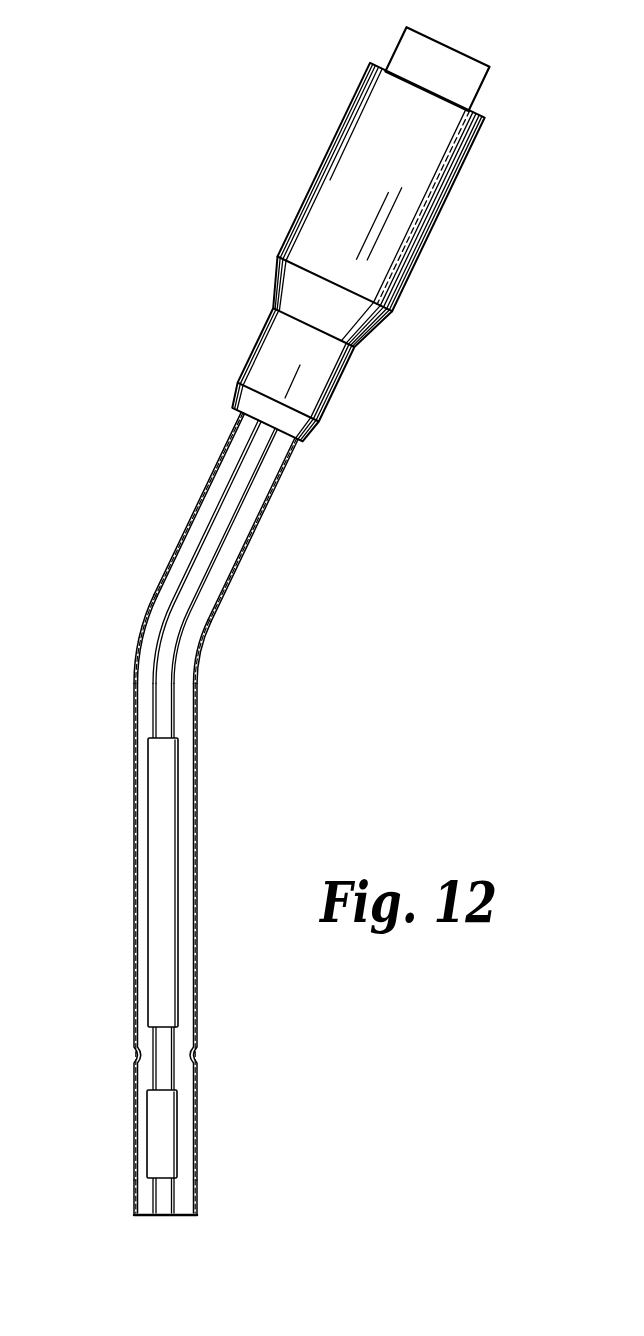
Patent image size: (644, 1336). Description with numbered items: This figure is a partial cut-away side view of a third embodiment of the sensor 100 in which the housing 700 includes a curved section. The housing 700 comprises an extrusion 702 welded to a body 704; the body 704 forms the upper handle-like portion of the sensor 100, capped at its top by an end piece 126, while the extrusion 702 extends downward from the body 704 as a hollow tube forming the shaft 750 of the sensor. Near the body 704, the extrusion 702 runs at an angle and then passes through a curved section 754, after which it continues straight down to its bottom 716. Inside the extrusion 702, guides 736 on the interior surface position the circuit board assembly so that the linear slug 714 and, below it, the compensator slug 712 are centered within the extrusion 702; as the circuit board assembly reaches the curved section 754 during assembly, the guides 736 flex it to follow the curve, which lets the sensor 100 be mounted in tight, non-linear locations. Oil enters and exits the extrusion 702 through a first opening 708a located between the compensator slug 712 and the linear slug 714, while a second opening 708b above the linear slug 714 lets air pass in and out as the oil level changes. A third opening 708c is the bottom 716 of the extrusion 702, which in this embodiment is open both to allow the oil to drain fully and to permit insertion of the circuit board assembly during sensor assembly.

The sensor 100 is at (250, 250).
The cap / connector end 126 is at (407, 58).
The housing 700 is at (262, 643).
The body 704 is at (415, 240).
The extrusion 702 is at (212, 588).
The shaft assembly 750 is at (183, 845).
The second opening 708b is at (196, 486).
The curved section 754 is at (133, 641).
The guides 736 is at (150, 683).
The linear slug 714 is at (177, 775).
The compensator slug 712 is at (177, 1113).
The first opening 708a is at (126, 1055).
The third opening 708c is at (180, 1217).
The bottom 716 is at (224, 1233).